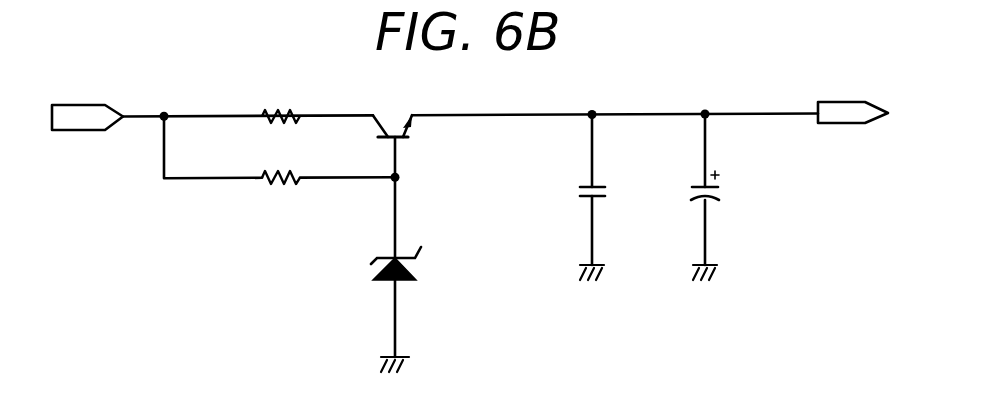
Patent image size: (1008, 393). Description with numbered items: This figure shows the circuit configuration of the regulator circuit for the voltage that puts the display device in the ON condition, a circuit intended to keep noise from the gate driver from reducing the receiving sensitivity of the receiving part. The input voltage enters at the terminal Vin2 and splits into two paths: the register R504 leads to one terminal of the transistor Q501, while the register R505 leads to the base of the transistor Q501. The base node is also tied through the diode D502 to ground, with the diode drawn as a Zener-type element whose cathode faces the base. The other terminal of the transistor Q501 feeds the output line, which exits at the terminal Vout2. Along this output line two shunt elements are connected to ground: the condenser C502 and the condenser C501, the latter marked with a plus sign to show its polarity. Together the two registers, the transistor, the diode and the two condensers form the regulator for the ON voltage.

The register R504 is at (272, 113).
The register R505 is at (277, 186).
The transistor Q501 is at (387, 113).
The diode D502 is at (375, 258).
The condenser C502 is at (606, 193).
The condenser C501 is at (720, 193).
The input voltage terminal Vin2 is at (87, 104).
The output voltage terminal Vout2 is at (853, 99).